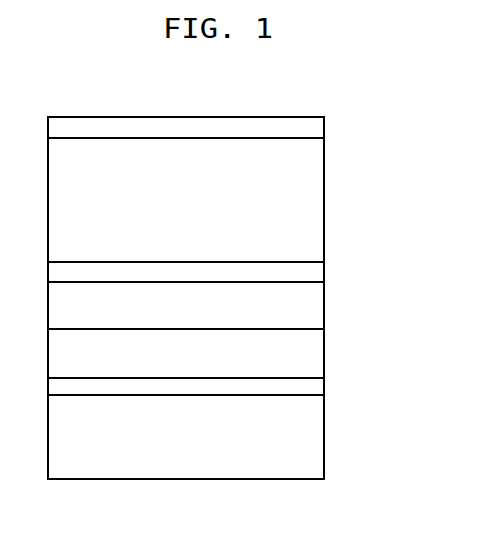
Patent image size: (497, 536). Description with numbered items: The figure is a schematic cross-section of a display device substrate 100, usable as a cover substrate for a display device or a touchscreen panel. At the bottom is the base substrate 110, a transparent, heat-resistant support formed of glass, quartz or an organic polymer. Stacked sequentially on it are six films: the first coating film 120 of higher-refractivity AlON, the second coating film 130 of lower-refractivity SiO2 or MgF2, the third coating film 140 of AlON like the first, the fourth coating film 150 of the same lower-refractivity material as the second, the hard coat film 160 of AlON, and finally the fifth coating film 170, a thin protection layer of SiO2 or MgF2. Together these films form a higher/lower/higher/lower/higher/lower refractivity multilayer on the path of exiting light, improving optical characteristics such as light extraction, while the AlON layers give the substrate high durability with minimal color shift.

The display device substrate 100 is at (92, 86).
The base substrate 110 is at (320, 441).
The first coating film 120 is at (320, 389).
The second coating film 130 is at (320, 353).
The third coating film 140 is at (320, 311).
The fourth coating film 150 is at (320, 273).
The hard coat film 160 is at (320, 198).
The fifth coating film 170 is at (320, 126).